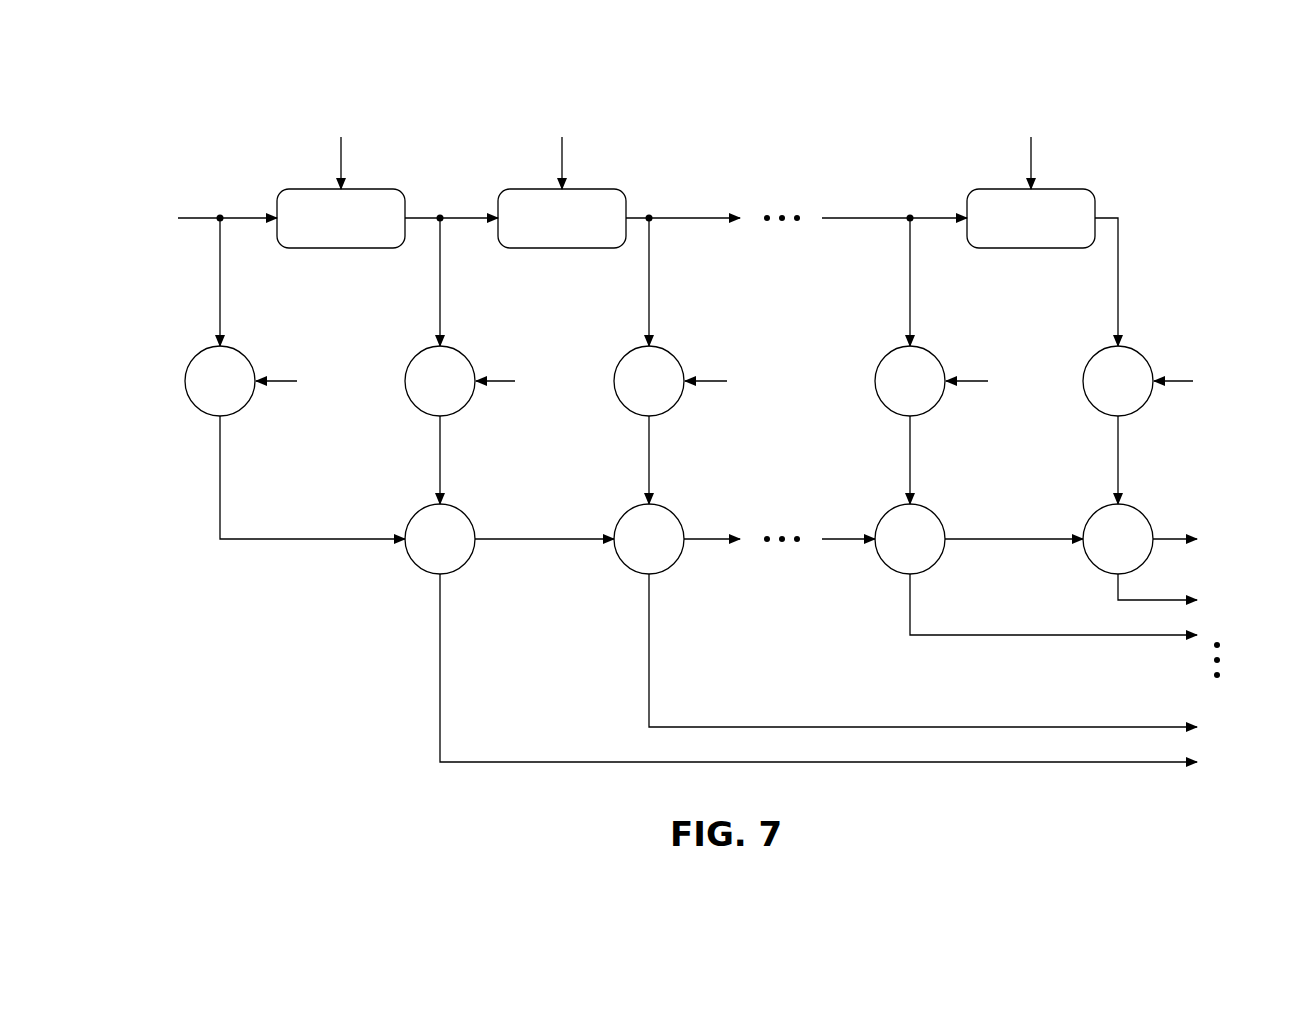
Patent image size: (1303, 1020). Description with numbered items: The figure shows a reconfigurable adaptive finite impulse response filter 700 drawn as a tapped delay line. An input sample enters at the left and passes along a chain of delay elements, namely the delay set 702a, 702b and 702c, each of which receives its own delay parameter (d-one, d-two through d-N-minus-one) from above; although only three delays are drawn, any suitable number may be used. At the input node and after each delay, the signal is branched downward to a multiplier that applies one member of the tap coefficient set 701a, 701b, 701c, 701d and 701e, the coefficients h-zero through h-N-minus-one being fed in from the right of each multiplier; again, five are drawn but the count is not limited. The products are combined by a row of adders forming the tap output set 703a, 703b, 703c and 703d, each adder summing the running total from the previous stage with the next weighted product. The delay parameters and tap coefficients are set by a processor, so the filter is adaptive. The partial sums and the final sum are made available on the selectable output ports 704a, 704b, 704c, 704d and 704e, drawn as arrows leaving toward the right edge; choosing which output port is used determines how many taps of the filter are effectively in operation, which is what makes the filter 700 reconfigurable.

The reconfigurable FIR filter 700 is at (1143, 118).
The tap coefficient set 701a is at (186, 381).
The tap coefficient set 701b is at (406, 381).
The tap coefficient set 701c is at (615, 381).
The tap coefficient set 701d is at (876, 381).
The tap coefficient set 701e is at (1084, 381).
The delay set 702a is at (312, 189).
The delay set 702b is at (533, 189).
The delay set 702c is at (1002, 189).
The tap output set 703a is at (410, 559).
The tap output set 703b is at (619, 559).
The tap output set 703c is at (880, 559).
The tap output set 703d is at (1088, 559).
The output port 704a is at (1171, 537).
The output port 704b is at (1173, 600).
The output port 704c is at (1130, 637).
The output port 704d is at (1025, 725).
The output port 704e is at (1098, 763).